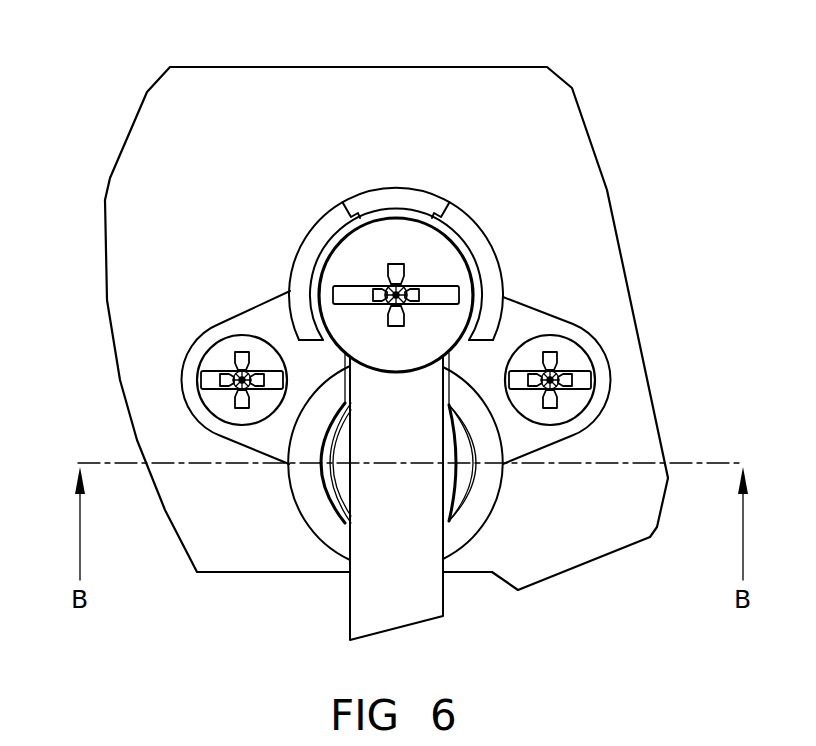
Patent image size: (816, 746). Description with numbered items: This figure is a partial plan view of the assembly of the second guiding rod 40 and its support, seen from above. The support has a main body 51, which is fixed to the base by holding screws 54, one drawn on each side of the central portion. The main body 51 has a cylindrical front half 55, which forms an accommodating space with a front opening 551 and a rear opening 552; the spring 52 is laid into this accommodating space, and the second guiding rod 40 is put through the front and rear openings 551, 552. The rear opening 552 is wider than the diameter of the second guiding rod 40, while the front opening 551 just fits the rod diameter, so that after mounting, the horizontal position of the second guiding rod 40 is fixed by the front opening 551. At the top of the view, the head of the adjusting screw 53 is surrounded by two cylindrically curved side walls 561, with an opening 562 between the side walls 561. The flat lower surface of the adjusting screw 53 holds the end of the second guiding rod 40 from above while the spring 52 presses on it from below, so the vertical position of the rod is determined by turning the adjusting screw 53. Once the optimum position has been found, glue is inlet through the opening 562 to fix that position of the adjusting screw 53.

The second guiding rod 40 is at (430, 592).
The main body 51 is at (535, 584).
The spring 52 is at (468, 479).
The adjusting screw 53 is at (368, 271).
The holding screws 54 is at (563, 355).
The cylindrical front half 55 is at (340, 474).
The front opening 551 is at (348, 546).
The rear opening 552 is at (332, 398).
The cylindrically curved side walls 561 is at (295, 290).
The opening 562 is at (386, 188).